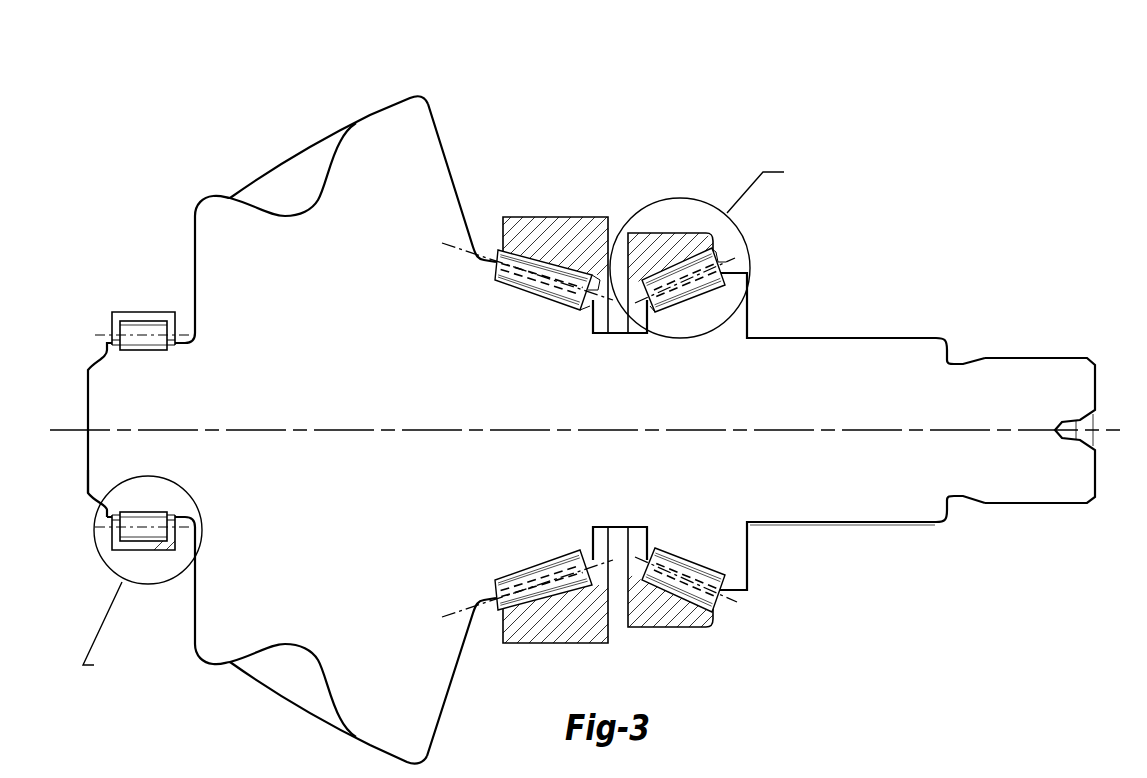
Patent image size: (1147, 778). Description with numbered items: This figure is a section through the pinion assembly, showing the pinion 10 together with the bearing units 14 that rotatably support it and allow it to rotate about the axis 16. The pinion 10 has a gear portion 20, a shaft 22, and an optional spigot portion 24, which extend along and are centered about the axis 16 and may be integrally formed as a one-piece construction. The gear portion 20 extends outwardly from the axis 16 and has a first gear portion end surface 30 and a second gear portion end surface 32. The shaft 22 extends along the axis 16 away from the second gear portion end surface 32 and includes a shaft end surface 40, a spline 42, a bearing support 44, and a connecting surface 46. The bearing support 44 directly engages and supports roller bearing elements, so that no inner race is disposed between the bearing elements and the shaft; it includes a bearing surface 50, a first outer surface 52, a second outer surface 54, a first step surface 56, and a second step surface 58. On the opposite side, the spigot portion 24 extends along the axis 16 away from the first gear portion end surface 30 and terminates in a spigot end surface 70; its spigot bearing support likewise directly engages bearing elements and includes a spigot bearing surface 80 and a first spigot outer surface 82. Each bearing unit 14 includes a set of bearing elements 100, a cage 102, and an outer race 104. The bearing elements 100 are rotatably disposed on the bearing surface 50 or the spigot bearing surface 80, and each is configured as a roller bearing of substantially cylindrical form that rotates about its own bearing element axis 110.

The pinion 10 is at (591, 405).
The shaft 22 is at (591, 405).
The gear portion 20 is at (383, 108).
The second gear portion end surface 32 is at (442, 150).
The first gear portion end surface 30 is at (195, 244).
The spigot portion 24 is at (90, 382).
The spigot end surface 70 is at (88, 460).
The bearing unit 14 is at (573, 389).
The first spigot outer surface 82 is at (573, 389).
The spigot bearing surface 80 is at (143, 347).
The cage 102 is at (108, 532).
The bearing elements 100 is at (635, 430).
The bearing element axis 110 is at (455, 244).
The first outer surface 52 is at (492, 253).
The second outer surface 54 is at (590, 310).
The first step surface 56 is at (497, 280).
The second step surface 58 is at (580, 304).
The axis 16 is at (988, 432).
The shaft end surface 40 is at (1097, 467).
The spline 42 is at (867, 522).
The bearing support 44 is at (643, 540).
The connecting surface 46 is at (617, 530).
The bearing surface 50 is at (551, 563).
The outer race 104 is at (573, 389).